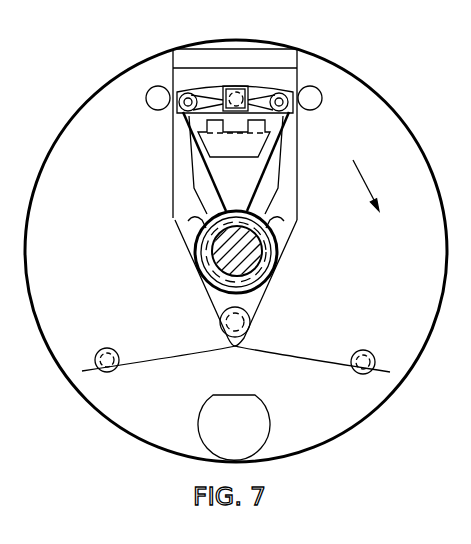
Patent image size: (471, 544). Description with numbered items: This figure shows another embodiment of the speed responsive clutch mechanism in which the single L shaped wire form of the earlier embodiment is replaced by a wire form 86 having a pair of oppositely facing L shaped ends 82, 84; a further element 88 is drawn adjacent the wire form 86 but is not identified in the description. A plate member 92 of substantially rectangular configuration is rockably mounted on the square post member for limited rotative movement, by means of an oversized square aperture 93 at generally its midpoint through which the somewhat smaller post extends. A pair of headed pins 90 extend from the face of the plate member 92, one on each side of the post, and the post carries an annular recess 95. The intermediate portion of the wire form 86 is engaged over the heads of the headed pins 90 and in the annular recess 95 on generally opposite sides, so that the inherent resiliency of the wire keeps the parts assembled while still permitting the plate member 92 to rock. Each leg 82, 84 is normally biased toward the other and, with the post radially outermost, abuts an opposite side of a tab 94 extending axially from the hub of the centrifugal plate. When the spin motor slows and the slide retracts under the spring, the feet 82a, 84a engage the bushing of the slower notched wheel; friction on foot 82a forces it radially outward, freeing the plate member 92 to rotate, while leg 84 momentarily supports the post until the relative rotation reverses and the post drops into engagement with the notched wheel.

The L shaped end 82 is at (198, 135).
The foot portion 82a is at (188, 221).
The L shaped end 84 is at (275, 140).
The foot portion 84a is at (284, 221).
The wire form 86 is at (268, 94).
The left pulley 88 is at (218, 64).
The headed pins 90 is at (286, 97).
The plate member 92 is at (198, 89).
The square aperture 93 is at (237, 88).
The tab 94 is at (236, 210).
The annular recess 95 is at (240, 90).